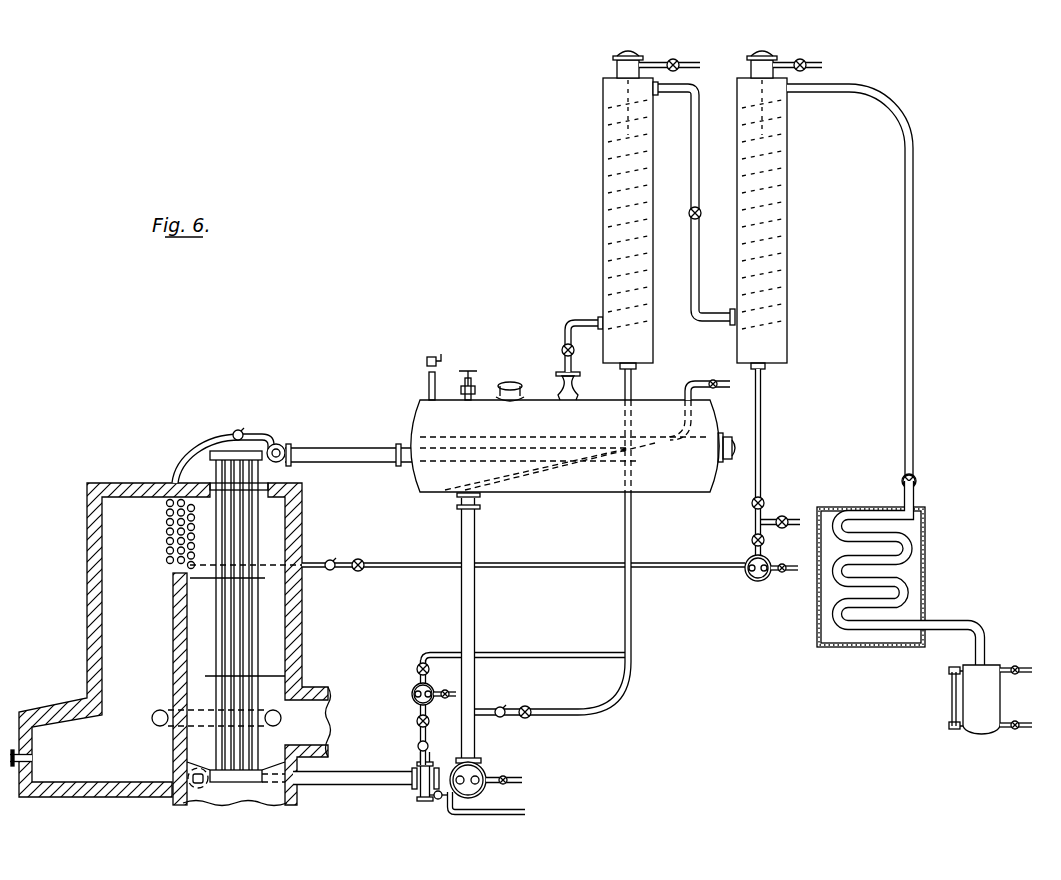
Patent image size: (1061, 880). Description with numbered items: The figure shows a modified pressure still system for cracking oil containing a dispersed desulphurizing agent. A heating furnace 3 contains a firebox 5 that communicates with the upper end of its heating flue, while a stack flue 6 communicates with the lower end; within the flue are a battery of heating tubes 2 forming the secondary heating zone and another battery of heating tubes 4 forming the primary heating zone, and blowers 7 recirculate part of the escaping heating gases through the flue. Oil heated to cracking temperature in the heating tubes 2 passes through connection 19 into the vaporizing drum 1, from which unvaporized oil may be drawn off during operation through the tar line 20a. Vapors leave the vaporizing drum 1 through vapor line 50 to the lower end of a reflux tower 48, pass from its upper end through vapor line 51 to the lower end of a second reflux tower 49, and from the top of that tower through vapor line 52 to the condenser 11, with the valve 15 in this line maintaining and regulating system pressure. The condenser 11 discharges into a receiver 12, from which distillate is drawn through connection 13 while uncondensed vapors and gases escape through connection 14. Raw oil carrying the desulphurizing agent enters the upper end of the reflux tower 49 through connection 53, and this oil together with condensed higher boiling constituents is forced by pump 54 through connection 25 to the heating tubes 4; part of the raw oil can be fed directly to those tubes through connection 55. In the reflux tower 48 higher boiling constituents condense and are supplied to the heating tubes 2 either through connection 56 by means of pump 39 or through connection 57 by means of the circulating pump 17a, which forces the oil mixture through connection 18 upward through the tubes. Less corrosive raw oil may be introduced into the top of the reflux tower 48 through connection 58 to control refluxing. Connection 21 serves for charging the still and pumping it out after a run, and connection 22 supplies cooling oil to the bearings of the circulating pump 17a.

The vaporizing drum 1 is at (668, 496).
The battery of heating tubes 2 is at (262, 633).
The heating furnace 3 is at (87, 602).
The battery of heating tubes 4 is at (168, 532).
The firebox 5 is at (50, 738).
The stack flue 6 is at (317, 723).
The blowers 7 is at (157, 710).
The condenser 11 is at (840, 653).
The receiver 12 is at (970, 740).
The connection 13 is at (1025, 733).
The connection 14 is at (1020, 665).
The valve 15 is at (918, 482).
The circulating pump 17a is at (481, 771).
The connection 18 is at (364, 776).
The connection 19 is at (332, 458).
The tar line 20a is at (716, 382).
The connection 21 is at (523, 812).
The connection 22 is at (520, 778).
The connection 25 is at (424, 568).
The pump 39 is at (412, 690).
The reflux tower 48 is at (603, 222).
The reflux tower 49 is at (790, 218).
The vapor line 50 is at (560, 335).
The vapor line 51 is at (708, 328).
The vapor line 52 is at (915, 300).
The connection 53 is at (835, 63).
The pump 54 is at (757, 583).
The connection 55 is at (789, 514).
The connection 56 is at (548, 658).
The connection 57 is at (556, 718).
The connection 58 is at (689, 63).